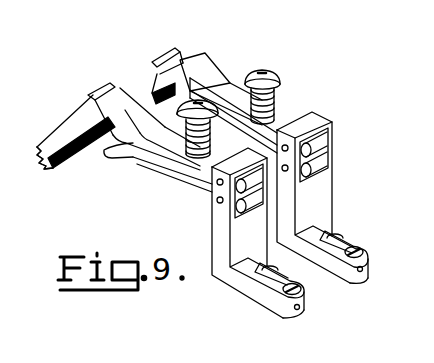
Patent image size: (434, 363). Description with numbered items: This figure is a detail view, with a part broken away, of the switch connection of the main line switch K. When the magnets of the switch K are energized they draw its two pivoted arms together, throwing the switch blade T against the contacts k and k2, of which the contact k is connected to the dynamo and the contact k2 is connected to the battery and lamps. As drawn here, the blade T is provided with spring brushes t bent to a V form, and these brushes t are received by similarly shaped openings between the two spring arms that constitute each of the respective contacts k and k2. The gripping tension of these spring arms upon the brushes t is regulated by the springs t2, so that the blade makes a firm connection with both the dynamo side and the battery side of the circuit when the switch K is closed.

The switch blade T is at (36, 141).
The spring brushes t is at (93, 97).
The springs t2 is at (272, 92).
The contact k is at (117, 163).
The contact k2 is at (207, 71).
The main line switch K is at (166, 222).